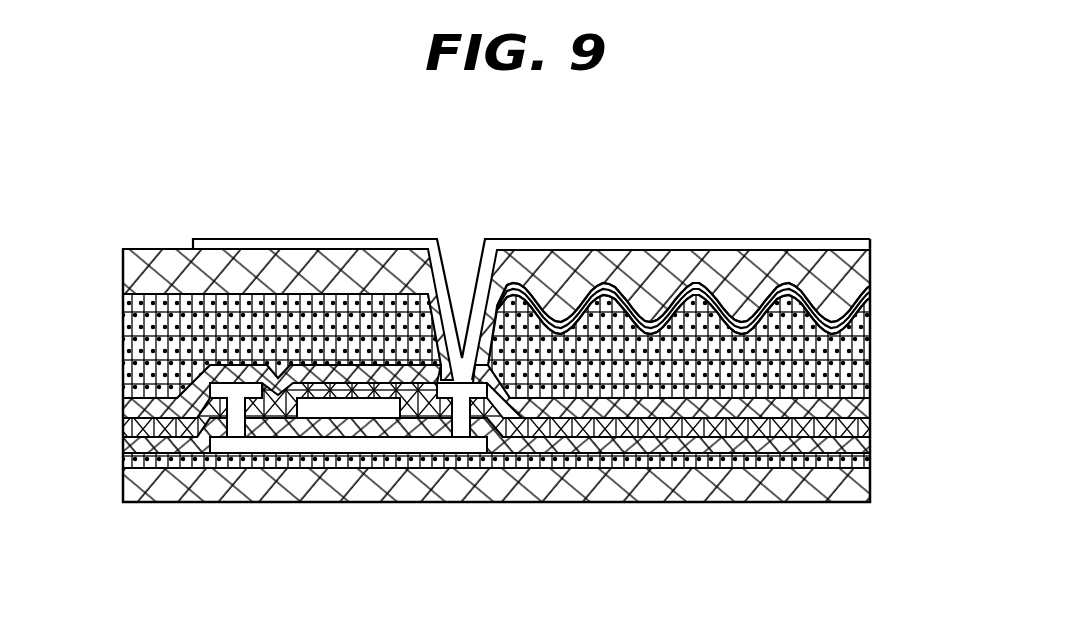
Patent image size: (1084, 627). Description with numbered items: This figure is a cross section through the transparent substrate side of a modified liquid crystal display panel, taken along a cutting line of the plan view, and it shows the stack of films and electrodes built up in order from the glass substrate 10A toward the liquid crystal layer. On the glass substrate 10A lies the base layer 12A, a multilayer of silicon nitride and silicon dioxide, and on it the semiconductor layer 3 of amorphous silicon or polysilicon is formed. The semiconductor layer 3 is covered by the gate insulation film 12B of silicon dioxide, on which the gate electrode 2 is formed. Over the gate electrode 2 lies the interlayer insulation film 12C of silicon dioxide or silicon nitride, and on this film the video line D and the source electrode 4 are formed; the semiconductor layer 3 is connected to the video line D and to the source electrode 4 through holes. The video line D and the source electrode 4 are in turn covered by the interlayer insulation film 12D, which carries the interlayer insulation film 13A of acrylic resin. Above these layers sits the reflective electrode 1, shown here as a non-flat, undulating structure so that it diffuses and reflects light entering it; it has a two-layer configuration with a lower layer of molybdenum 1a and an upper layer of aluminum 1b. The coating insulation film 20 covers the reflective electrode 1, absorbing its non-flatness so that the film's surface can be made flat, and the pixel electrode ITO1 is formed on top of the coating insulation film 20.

The glass substrate 10A is at (862, 487).
The base layer 12A is at (857, 460).
The gate insulation film 12B is at (866, 446).
The interlayer insulation film 12C is at (126, 428).
The interlayer insulation film 12D is at (124, 406).
The interlayer insulation film 13A is at (137, 362).
The coating insulation film 20 is at (722, 268).
The pixel electrode ITO1 is at (518, 238).
The reflective electrode 1 is at (852, 312).
The lower layer of molybdenum 1a is at (874, 303).
The upper layer of aluminum 1b is at (874, 291).
The video line D is at (212, 443).
The gate electrode 2 is at (349, 412).
The semiconductor layer 3 is at (304, 432).
The source electrode 4 is at (436, 400).